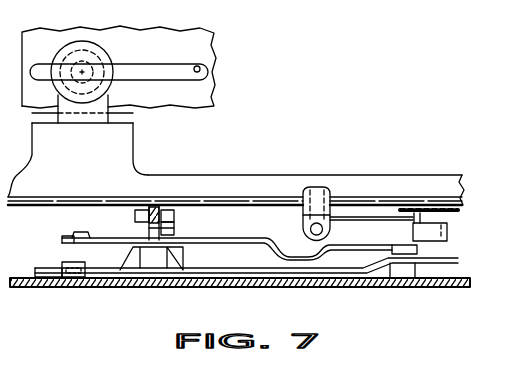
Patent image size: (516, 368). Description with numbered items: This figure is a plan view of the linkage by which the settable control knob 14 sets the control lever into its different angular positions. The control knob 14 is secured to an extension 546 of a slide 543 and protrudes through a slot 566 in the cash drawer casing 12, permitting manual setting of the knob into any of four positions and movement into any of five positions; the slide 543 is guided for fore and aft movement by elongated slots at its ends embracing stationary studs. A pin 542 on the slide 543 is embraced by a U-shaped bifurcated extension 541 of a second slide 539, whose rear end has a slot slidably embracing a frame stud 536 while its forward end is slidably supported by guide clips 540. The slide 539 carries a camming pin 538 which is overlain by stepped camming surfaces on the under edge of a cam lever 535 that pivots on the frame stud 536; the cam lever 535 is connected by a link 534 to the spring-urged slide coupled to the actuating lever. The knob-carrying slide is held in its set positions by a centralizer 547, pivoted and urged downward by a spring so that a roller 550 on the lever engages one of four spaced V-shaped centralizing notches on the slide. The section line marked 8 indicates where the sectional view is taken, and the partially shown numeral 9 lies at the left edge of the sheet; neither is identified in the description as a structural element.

The section line 8- 8 is at (50, 3).
The frame 9 is at (74, 157).
The cash drawer casing 12 is at (214, 96).
The control knob 14 is at (87, 49).
The slot 566 is at (212, 66).
The extension 546 is at (108, 125).
The slide 543 is at (250, 182).
The roller 550 is at (329, 188).
The centralizer 547 is at (348, 220).
The pin 542 is at (156, 207).
The U-shaped bifurcated extension 541 is at (136, 222).
The camming pin 538 is at (176, 234).
The link 534 is at (72, 233).
The cam lever 535 is at (62, 242).
The slide 539 is at (253, 272).
The guide clips 540 is at (80, 280).
The frame stud 536 is at (410, 285).